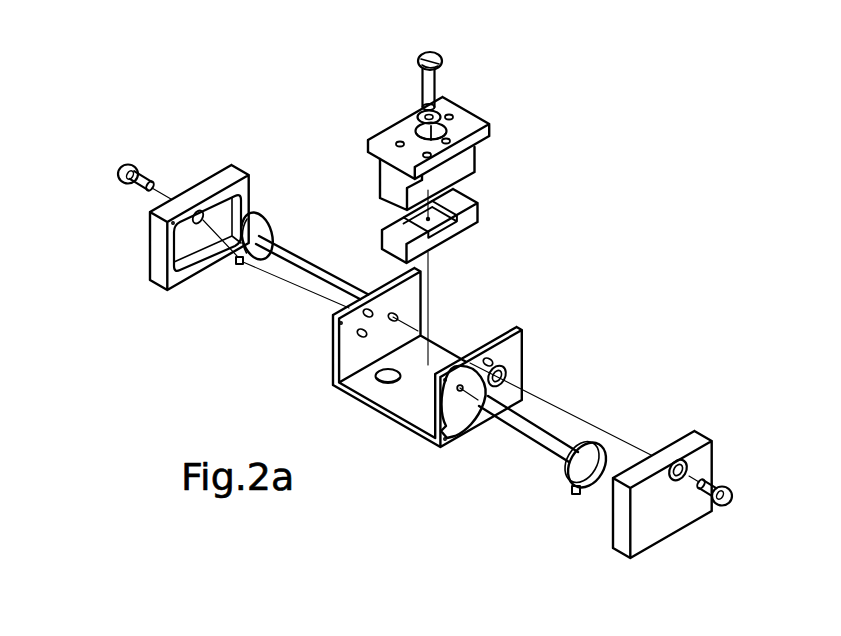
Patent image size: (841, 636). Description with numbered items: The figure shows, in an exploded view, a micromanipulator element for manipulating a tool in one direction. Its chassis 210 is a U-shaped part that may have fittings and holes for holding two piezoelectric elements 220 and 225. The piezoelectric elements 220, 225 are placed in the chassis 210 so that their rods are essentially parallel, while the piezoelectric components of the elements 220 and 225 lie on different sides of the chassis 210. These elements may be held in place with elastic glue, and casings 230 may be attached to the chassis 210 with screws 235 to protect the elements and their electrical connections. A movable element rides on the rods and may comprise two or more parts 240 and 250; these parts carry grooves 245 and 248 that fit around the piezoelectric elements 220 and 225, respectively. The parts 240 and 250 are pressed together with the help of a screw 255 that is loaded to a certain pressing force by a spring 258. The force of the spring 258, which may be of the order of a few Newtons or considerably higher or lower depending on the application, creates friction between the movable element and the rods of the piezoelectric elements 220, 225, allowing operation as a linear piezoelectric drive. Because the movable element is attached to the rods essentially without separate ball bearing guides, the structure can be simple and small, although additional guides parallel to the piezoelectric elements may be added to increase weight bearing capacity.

The chassis 210 is at (506, 314).
The piezoelectric element 220 is at (285, 262).
The piezoelectric element 225 is at (536, 430).
The casing 230 is at (204, 154).
The screw 235 is at (131, 188).
The part of the movable element 240 is at (419, 219).
The groove 245 is at (478, 164).
The groove 248 is at (424, 234).
The part of the movable element 250 is at (494, 187).
The screw 255 is at (422, 88).
The spring 258 is at (437, 116).